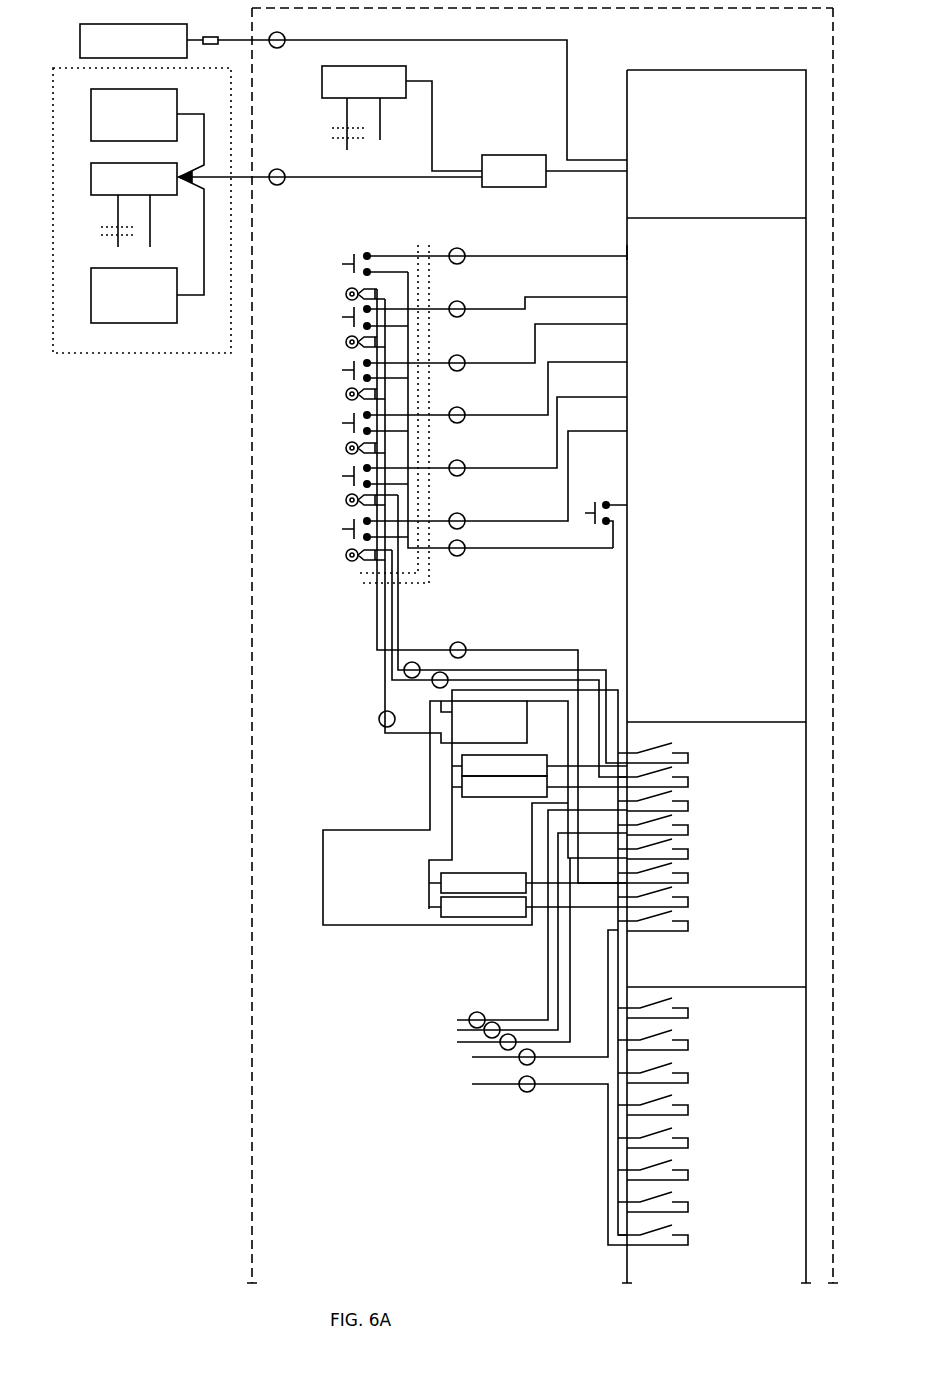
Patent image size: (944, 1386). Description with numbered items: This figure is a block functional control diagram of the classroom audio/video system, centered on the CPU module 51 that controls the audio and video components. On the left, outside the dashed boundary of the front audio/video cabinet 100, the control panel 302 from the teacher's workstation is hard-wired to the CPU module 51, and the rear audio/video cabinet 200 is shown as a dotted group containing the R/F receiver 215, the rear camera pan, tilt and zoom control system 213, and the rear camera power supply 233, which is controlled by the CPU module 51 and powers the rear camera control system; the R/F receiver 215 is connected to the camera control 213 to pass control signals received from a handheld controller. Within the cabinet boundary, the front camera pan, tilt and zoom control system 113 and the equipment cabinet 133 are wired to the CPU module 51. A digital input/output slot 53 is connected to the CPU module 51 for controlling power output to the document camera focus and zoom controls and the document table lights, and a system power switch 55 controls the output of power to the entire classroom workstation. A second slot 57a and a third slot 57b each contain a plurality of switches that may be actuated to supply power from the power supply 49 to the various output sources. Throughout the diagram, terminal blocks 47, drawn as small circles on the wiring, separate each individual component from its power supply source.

The front audio/video cabinet 100 is at (252, 682).
The control panel 302 is at (84, 50).
The terminal blocks 47 is at (274, 48).
The rear audio/video cabinet 200 is at (78, 356).
The R/F receiver 215 is at (98, 135).
The rear camera pan, tilt and zoom control system 213 is at (101, 193).
The rear camera power supply 233 is at (97, 298).
The front camera pan, tilt and zoom control system 113 is at (324, 97).
The equipment cabinet 133 is at (490, 160).
The CPU module 51 is at (657, 73).
The digital input/output slot 53 is at (630, 243).
The system power switch 55 is at (607, 500).
The power supply 49 is at (345, 840).
The second slot 57a is at (638, 952).
The third slot 57b is at (636, 1250).